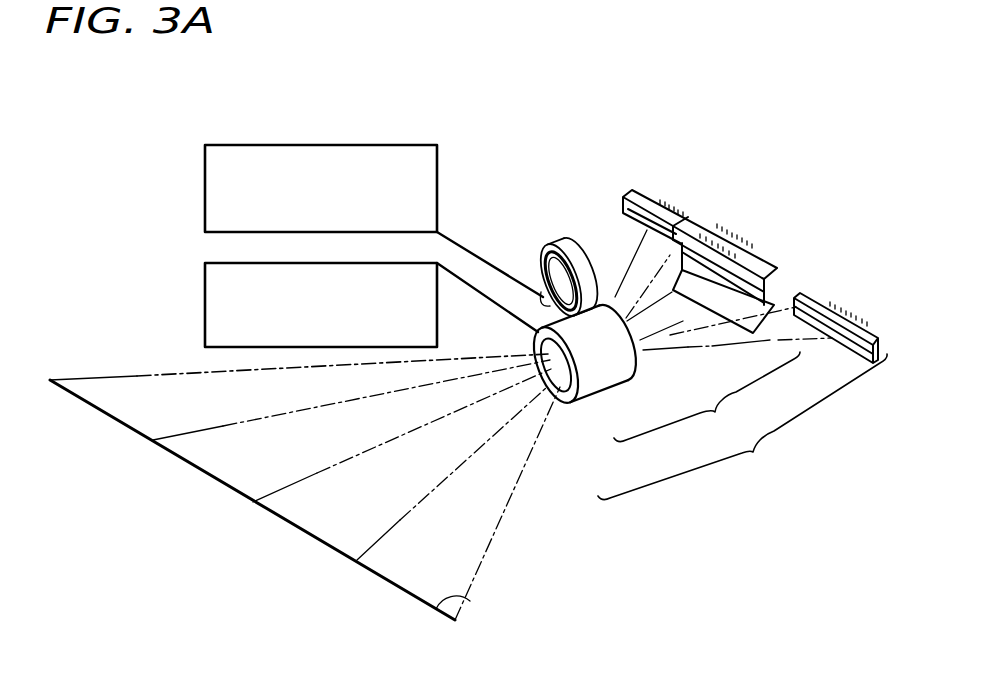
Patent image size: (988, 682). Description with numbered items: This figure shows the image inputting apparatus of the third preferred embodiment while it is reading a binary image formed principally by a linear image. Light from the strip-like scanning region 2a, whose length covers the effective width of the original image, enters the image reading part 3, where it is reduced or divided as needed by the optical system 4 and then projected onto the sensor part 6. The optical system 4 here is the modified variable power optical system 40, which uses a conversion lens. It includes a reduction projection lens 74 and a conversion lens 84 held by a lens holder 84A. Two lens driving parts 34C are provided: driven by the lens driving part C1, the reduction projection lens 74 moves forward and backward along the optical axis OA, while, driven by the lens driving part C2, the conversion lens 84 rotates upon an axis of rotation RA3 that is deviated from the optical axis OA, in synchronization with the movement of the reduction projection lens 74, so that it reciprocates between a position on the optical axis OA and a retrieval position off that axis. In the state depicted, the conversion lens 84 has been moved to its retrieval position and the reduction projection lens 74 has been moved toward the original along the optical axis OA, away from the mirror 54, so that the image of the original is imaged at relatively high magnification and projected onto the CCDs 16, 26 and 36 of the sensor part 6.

The lens driving parts 34C is at (148, 187).
The lens driving part C2 is at (204, 204).
The lens driving part C1 is at (204, 277).
The conversion lens 84 is at (542, 244).
The lens holder 84A is at (548, 251).
The variable power optical system 40 is at (528, 256).
The axis of rotation RA3 is at (604, 290).
The reduction projection lens 74 is at (607, 388).
The CCD 26 is at (633, 189).
The CCD 16 is at (700, 217).
The sensor part 6 is at (767, 242).
The mirror 54 is at (773, 341).
The CCD 36 is at (806, 292).
The optical axis OA is at (408, 432).
The optical system 4 is at (707, 398).
The image reading part 3 is at (742, 427).
The scanning region 2a is at (466, 600).